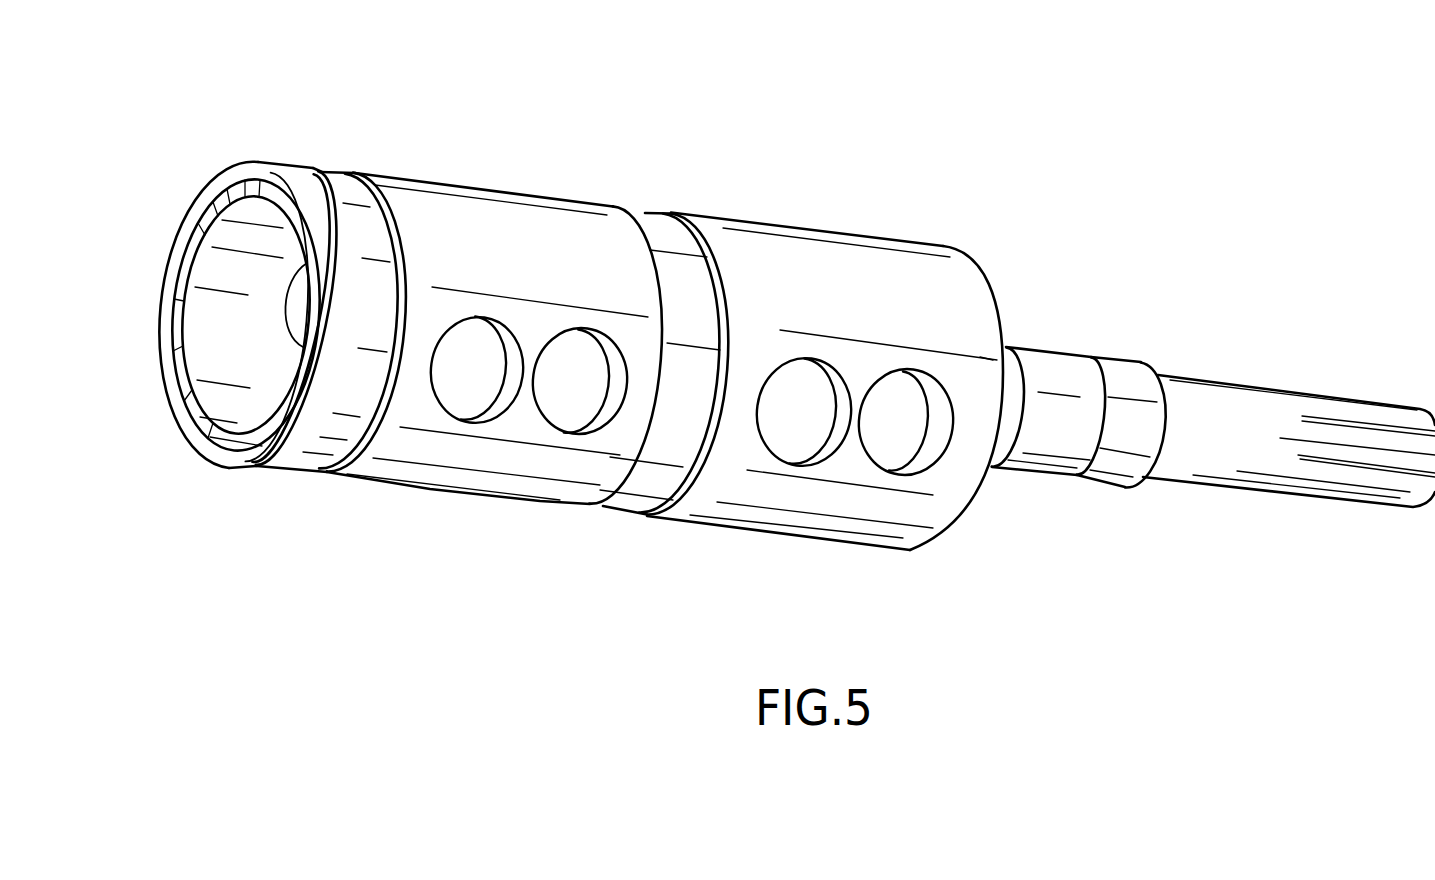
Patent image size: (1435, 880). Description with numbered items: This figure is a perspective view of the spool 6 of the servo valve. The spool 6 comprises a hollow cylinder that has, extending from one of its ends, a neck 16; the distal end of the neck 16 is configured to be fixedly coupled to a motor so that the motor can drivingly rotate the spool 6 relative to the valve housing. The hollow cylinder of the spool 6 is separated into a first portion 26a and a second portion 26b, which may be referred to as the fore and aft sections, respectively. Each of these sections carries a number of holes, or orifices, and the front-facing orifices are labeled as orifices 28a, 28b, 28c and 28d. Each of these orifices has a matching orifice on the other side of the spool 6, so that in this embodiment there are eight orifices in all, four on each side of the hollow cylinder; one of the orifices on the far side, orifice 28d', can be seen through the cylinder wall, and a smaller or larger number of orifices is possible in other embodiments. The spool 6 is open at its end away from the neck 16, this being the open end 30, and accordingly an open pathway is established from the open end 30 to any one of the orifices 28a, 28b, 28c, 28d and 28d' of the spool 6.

The spool 6 is at (790, 96).
The neck 16 is at (1125, 372).
The first portion 26a is at (902, 262).
The second portion 26b is at (533, 220).
The orifice 28a is at (888, 447).
The orifice 28b is at (788, 428).
The orifice 28c is at (567, 398).
The orifice 28d is at (477, 448).
The orifice 28d' is at (288, 200).
The open end 30 is at (230, 363).